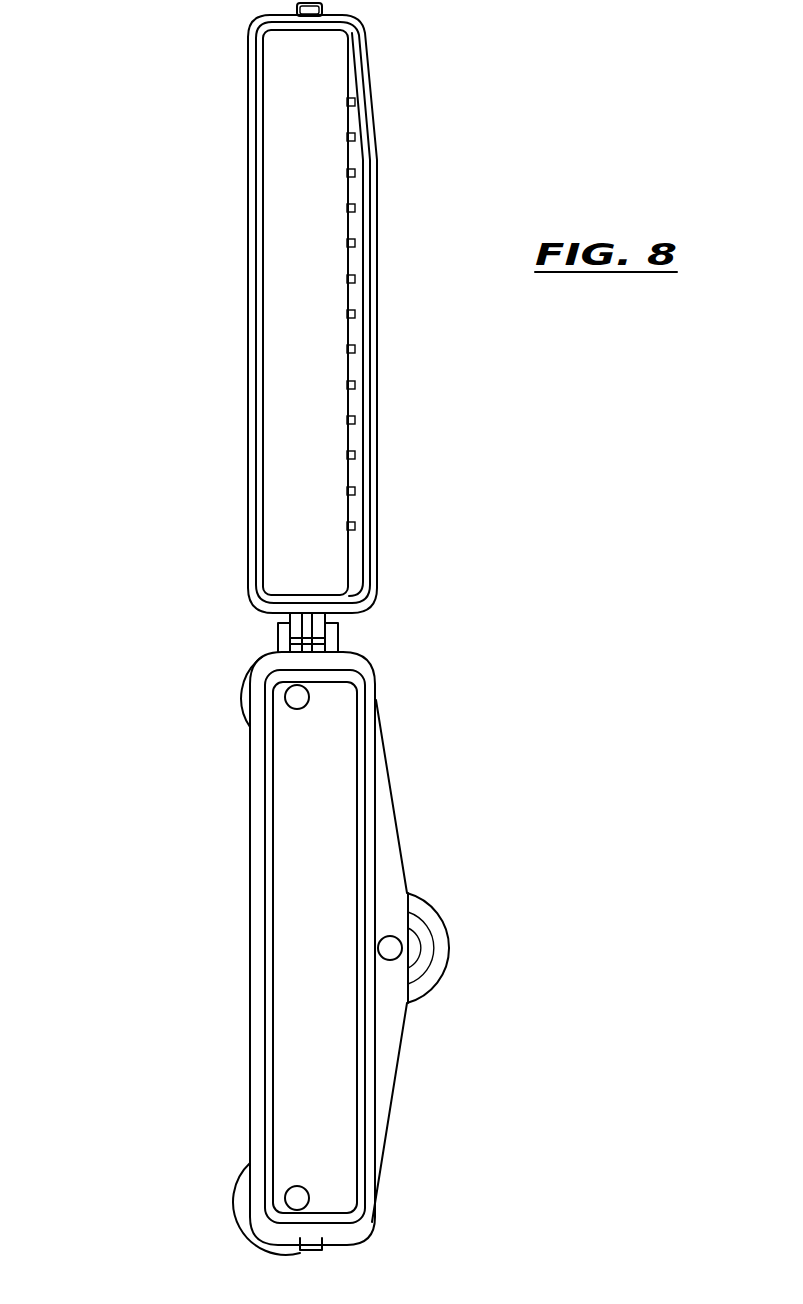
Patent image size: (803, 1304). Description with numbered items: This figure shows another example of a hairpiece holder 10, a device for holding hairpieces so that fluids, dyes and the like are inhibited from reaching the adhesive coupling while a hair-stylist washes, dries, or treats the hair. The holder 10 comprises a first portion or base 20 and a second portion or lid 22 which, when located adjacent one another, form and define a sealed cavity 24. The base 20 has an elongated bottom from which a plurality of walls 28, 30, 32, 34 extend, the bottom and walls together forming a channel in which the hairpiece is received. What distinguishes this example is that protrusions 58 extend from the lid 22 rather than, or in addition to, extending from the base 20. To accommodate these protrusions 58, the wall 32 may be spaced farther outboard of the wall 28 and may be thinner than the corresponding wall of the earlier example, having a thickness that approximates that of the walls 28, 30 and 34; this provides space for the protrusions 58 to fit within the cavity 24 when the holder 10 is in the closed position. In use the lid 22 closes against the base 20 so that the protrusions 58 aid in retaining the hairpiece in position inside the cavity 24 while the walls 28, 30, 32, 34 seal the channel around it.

The hairpiece holder 10 is at (138, 214).
The lid 22 is at (240, 383).
The protrusions 58 is at (356, 545).
The wall 30 is at (345, 652).
The base 20 is at (250, 891).
The wall 28 is at (250, 790).
The sealed cavity 24 is at (321, 1082).
The wall 32 is at (362, 862).
The wall 34 is at (336, 1249).